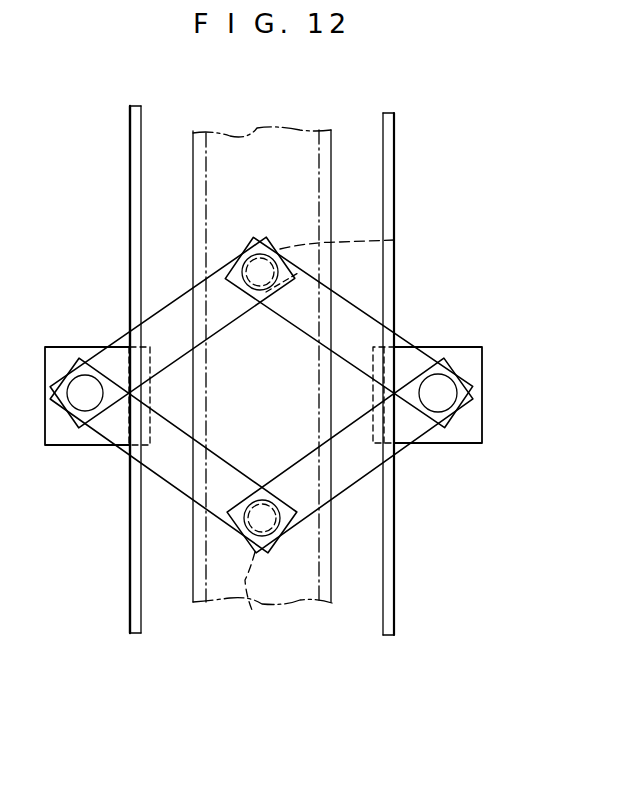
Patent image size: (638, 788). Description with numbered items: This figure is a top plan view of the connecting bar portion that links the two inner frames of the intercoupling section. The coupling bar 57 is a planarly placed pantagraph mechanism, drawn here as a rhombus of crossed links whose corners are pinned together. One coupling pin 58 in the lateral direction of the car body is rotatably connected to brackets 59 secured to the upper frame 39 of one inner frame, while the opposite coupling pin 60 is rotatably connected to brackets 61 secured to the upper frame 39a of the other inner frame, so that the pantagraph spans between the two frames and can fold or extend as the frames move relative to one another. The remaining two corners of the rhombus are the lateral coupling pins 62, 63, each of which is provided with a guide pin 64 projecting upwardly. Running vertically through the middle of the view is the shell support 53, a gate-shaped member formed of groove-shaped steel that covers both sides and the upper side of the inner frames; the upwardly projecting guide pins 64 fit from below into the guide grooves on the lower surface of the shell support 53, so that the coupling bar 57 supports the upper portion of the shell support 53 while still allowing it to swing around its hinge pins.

The upper frame 39 is at (395, 584).
The upper frame 39a is at (134, 546).
The shell support 53 is at (320, 183).
The coupling bar 57 is at (410, 318).
The coupling pin 58 is at (445, 398).
The bracket 59 is at (468, 362).
The coupling pin 60 is at (92, 405).
The bracket 61 is at (62, 360).
The lateral coupling pin 62 is at (247, 597).
The lateral coupling pin 63 is at (395, 240).
The guide pin 64 is at (278, 256).